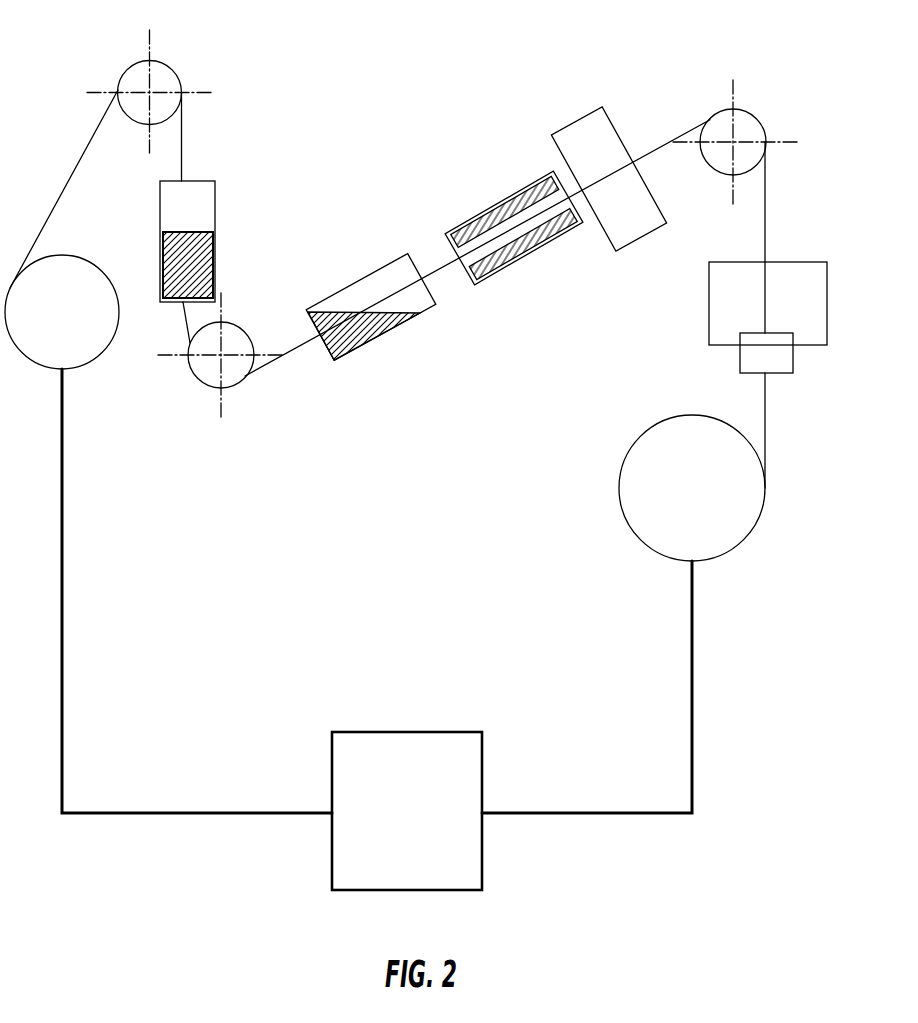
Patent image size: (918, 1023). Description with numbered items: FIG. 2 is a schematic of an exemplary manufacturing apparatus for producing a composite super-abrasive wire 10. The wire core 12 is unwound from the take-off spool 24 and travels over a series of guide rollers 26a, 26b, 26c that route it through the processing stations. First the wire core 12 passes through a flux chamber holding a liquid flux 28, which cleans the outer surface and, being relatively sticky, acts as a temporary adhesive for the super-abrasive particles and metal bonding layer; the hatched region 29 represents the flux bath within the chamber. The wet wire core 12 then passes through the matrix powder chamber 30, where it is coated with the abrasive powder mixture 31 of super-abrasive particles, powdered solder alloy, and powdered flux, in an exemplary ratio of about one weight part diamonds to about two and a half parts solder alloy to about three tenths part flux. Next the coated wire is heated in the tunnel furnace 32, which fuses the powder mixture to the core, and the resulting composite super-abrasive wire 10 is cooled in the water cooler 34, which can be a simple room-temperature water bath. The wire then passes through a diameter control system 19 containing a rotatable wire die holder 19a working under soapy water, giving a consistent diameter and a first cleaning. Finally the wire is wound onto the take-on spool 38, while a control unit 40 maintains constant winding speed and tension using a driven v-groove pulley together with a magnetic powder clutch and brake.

The composite super-abrasive wire 10 is at (659, 141).
The wire core 12 is at (76, 136).
The diameter control system 19 is at (806, 307).
The rotatable wire die holder 19a is at (769, 378).
The take-off spool 24 is at (74, 326).
The guide roller 26a is at (163, 55).
The guide roller 26b is at (205, 347).
The guide roller 26c is at (743, 127).
The liquid flux 28 is at (219, 182).
The tensioner pad 29 is at (180, 248).
The matrix powder chamber 30 is at (380, 265).
The abrasive powder mixture 31 is at (359, 332).
The tunnel furnace 32 is at (528, 264).
The water cooler 34 is at (574, 117).
The take-on spool 38 is at (704, 501).
The control unit 40 is at (418, 822).